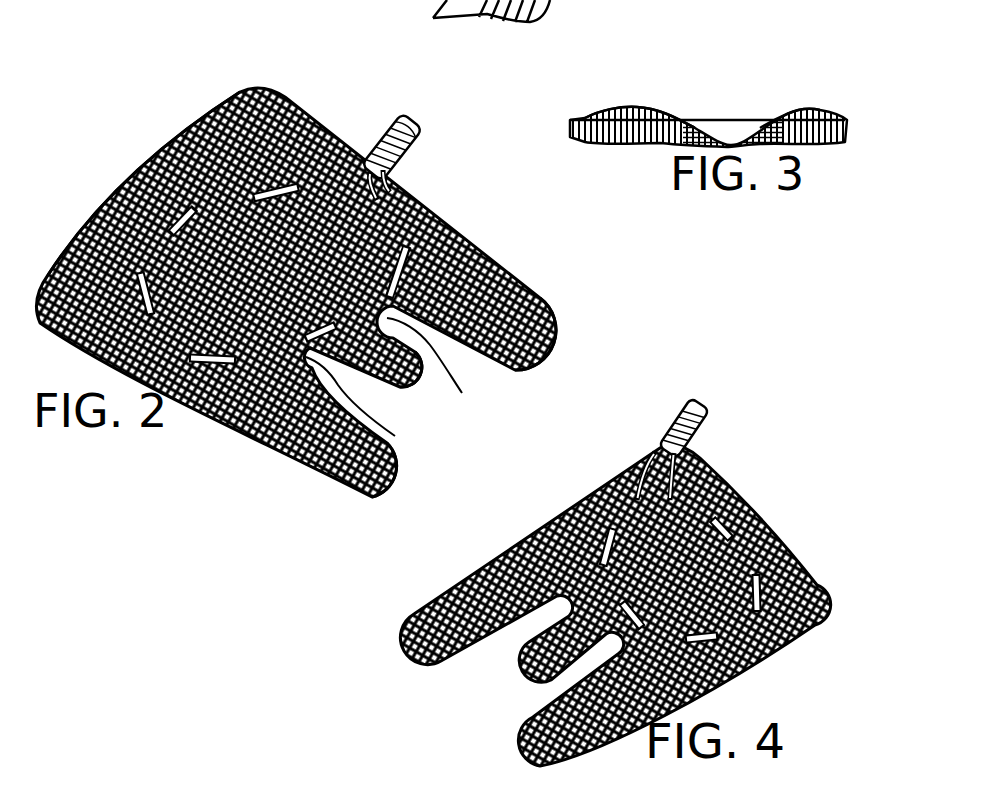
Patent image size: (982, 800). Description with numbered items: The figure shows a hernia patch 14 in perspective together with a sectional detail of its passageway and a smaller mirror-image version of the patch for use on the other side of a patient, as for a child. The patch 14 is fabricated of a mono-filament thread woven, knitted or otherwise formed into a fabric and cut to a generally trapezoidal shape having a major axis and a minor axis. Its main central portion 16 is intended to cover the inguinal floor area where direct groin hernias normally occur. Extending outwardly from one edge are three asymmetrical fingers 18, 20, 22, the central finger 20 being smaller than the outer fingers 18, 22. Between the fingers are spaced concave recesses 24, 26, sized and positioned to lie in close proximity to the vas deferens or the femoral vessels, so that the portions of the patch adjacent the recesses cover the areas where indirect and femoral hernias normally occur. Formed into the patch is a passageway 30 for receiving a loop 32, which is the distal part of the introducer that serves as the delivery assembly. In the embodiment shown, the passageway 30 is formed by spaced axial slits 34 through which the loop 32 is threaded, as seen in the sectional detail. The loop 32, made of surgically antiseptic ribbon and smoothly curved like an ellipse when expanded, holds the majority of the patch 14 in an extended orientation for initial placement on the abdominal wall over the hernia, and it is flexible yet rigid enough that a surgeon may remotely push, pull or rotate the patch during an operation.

In FIG. 2, the patch 14 is at (141, 163).
In FIG. 2, the main central portion 16 is at (89, 248).
In FIG. 2, the finger 18 is at (365, 500).
In FIG. 2, the central finger 20 is at (418, 380).
In FIG. 2, the finger 22 is at (508, 371).
In FIG. 2, the second slit 24 is at (395, 436).
In FIG. 2, the first slit 26 is at (462, 393).
In FIG. 3, the passageway 30 is at (830, 110).
In FIG. 3, the loop 32 is at (750, 119).
In FIG. 3, the axial slits 34 is at (681, 113).